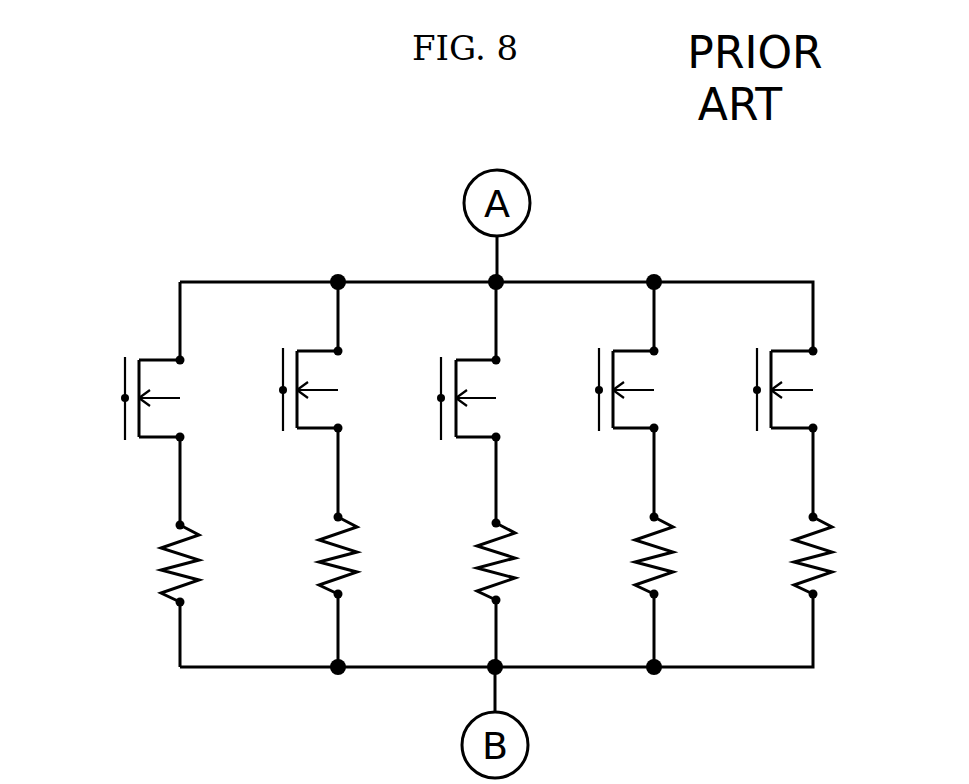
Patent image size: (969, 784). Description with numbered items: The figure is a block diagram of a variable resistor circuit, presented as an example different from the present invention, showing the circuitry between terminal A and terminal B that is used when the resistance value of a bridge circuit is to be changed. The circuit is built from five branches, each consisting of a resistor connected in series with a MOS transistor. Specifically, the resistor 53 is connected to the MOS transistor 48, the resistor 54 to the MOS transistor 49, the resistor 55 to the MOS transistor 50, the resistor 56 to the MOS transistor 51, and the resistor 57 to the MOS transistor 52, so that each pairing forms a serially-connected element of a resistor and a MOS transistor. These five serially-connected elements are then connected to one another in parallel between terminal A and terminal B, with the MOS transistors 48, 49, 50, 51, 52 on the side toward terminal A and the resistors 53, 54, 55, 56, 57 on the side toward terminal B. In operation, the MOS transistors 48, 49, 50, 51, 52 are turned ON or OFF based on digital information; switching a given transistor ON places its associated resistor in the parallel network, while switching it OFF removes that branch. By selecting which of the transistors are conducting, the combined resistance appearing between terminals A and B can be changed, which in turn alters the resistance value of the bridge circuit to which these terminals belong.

The MOS transistor 48 is at (165, 368).
The MOS transistor 49 is at (320, 367).
The MOS transistor 50 is at (475, 369).
The MOS transistor 51 is at (637, 360).
The MOS transistor 52 is at (795, 360).
The resistor 53 is at (178, 539).
The resistor 54 is at (340, 539).
The resistor 55 is at (495, 539).
The resistor 56 is at (653, 533).
The resistor 57 is at (810, 533).